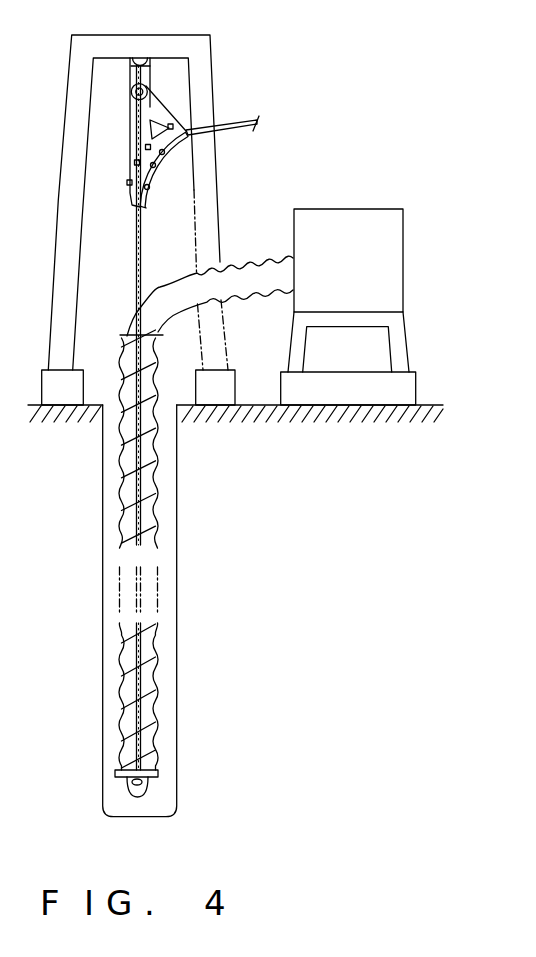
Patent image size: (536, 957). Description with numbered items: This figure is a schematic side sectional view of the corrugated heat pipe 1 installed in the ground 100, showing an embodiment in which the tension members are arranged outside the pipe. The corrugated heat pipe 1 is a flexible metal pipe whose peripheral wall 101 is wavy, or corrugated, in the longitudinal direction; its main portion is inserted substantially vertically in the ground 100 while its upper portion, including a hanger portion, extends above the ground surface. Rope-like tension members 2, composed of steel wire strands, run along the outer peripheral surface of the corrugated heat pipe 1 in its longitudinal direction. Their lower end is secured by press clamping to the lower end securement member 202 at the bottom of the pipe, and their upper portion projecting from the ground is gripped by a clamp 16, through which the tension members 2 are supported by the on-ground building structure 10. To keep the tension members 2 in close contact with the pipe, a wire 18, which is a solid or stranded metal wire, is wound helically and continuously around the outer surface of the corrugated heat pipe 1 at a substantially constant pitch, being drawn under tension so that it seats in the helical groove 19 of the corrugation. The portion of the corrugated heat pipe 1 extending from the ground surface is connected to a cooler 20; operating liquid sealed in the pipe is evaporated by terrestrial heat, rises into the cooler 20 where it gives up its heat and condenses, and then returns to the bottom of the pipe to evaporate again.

The on-ground building structure 10 is at (192, 103).
The clamp 16 is at (177, 137).
The cooler 20 is at (344, 217).
The corrugated heat pipe 1 is at (153, 492).
The rope-like tension members 2 is at (152, 458).
The peripheral wall 101 is at (155, 532).
The helical groove 19 is at (155, 645).
The wire 18 is at (152, 653).
The lower end securement member 202 is at (150, 775).
The ground 100 is at (380, 548).